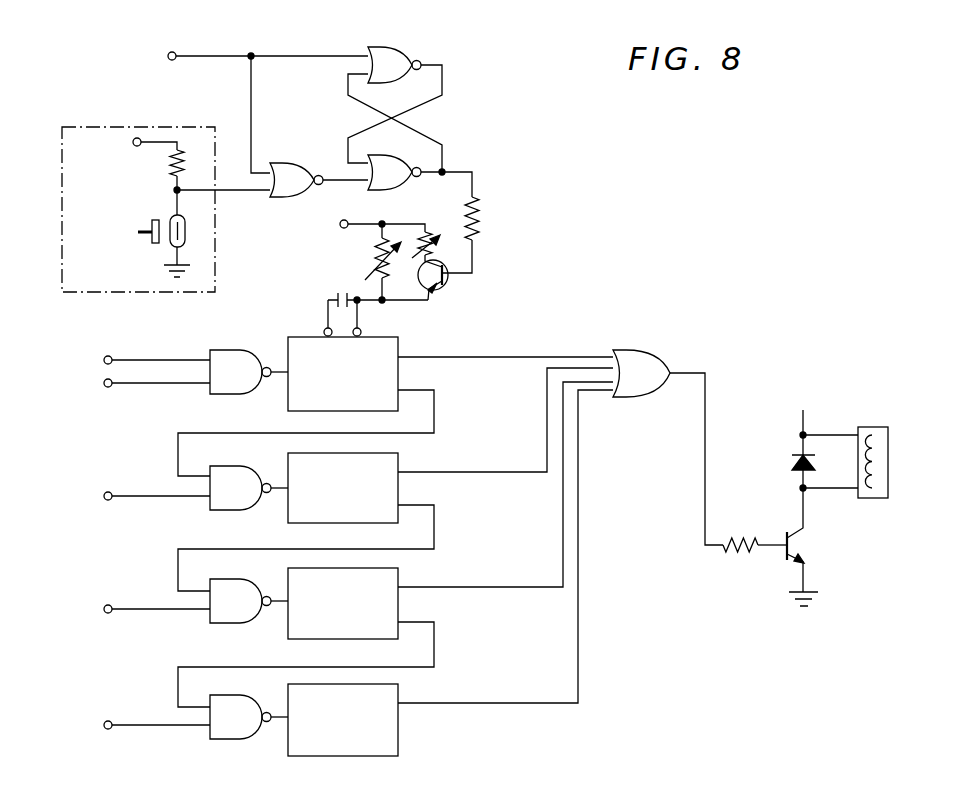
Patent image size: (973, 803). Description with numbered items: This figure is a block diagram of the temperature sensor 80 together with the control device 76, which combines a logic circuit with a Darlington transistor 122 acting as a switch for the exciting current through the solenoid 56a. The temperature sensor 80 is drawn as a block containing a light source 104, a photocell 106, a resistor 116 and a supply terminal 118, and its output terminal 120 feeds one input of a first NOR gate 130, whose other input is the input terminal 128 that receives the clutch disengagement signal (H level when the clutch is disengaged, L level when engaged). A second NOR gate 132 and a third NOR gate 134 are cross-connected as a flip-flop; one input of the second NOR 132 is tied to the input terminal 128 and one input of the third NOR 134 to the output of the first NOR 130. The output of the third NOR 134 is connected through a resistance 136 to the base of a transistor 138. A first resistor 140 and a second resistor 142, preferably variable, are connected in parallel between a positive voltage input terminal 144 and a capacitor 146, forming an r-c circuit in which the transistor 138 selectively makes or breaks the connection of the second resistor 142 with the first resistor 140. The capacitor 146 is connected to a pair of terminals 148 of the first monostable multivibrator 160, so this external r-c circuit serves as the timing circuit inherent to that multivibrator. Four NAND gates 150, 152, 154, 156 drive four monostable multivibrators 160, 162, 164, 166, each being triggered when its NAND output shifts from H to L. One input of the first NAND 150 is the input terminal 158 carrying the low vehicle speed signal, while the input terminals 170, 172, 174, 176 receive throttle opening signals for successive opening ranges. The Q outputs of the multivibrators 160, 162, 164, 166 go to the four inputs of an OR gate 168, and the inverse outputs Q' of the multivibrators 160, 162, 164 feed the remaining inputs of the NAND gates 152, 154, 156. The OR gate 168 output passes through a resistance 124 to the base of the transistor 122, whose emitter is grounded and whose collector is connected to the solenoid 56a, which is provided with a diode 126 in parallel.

The temperature sensor 80 is at (66, 127).
The light source 104 is at (154, 218).
The photocell 106 is at (186, 232).
The resistor 116 is at (181, 155).
The supply terminal 118 is at (133, 144).
The output terminal 120 is at (180, 192).
The input terminal 128 is at (169, 59).
The first NOR gate 130 is at (296, 163).
The second NOR gate 132 is at (406, 58).
The third NOR gate 134 is at (398, 163).
The resistance 136 is at (478, 213).
The transistor 138 is at (441, 288).
The first resistor 140 is at (370, 261).
The second resistor 142 is at (437, 236).
The positive voltage input terminal 144 is at (340, 224).
The capacitor 146 is at (343, 293).
The pair of terminals 148 is at (325, 330).
The first NAND gate 150 is at (231, 350).
The second NAND gate 152 is at (248, 466).
The third NAND gate 154 is at (222, 624).
The fourth NAND gate 156 is at (222, 740).
The input terminal 158 is at (108, 356).
The first monostable multivibrator 160 is at (302, 400).
The second monostable multivibrator 162 is at (302, 516).
The third monostable multivibrator 164 is at (302, 617).
The fourth monostable multivibrator 166 is at (302, 733).
The OR gate 168 is at (645, 362).
The input terminal 170 is at (108, 387).
The input terminal 172 is at (108, 500).
The input terminal 174 is at (108, 613).
The input terminal 176 is at (108, 721).
The control device 76 is at (567, 330).
The Darlington transistor 122 is at (785, 536).
The resistance 124 is at (744, 552).
The diode 126 is at (797, 462).
The solenoid 56a is at (888, 470).